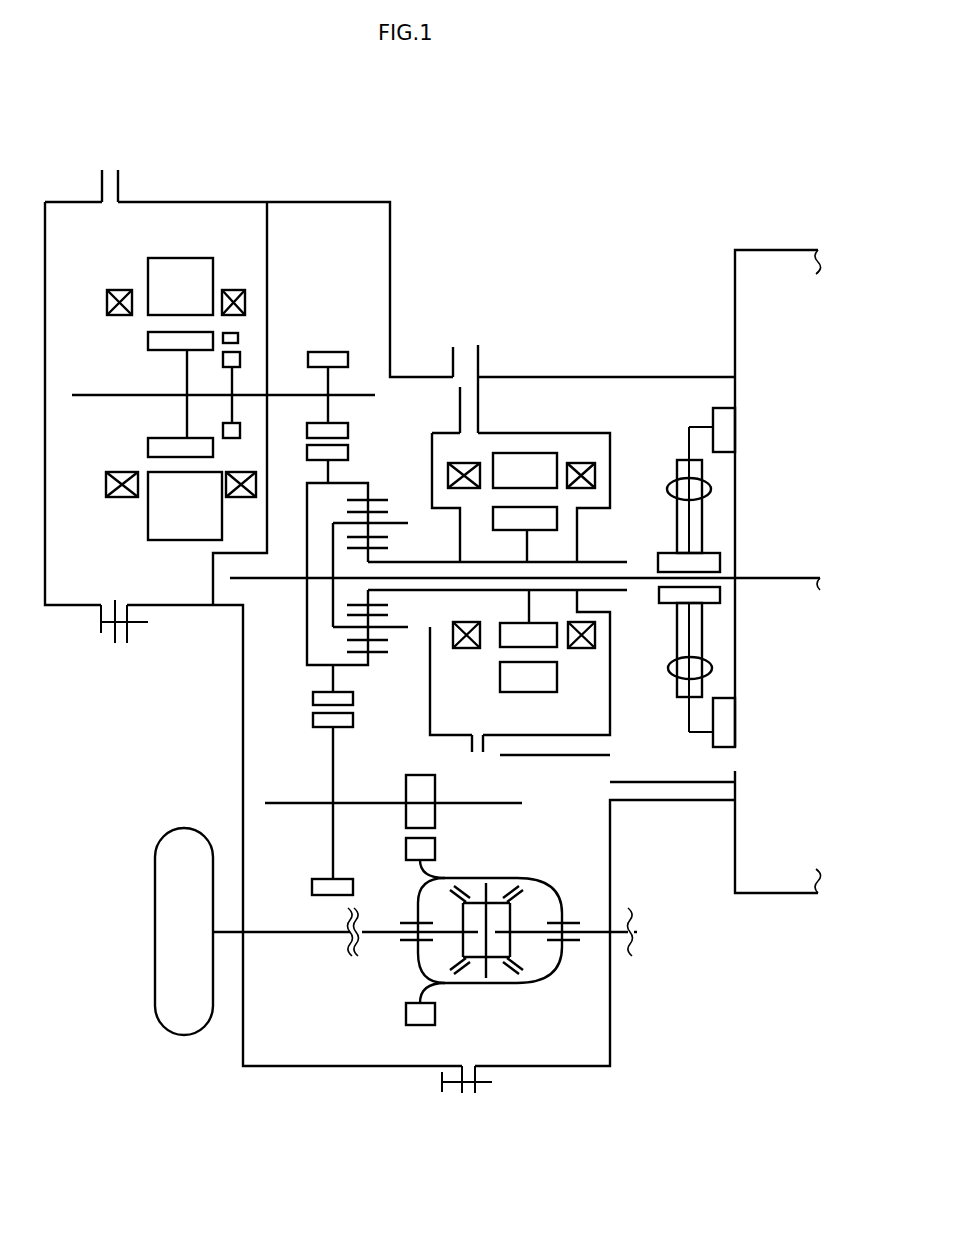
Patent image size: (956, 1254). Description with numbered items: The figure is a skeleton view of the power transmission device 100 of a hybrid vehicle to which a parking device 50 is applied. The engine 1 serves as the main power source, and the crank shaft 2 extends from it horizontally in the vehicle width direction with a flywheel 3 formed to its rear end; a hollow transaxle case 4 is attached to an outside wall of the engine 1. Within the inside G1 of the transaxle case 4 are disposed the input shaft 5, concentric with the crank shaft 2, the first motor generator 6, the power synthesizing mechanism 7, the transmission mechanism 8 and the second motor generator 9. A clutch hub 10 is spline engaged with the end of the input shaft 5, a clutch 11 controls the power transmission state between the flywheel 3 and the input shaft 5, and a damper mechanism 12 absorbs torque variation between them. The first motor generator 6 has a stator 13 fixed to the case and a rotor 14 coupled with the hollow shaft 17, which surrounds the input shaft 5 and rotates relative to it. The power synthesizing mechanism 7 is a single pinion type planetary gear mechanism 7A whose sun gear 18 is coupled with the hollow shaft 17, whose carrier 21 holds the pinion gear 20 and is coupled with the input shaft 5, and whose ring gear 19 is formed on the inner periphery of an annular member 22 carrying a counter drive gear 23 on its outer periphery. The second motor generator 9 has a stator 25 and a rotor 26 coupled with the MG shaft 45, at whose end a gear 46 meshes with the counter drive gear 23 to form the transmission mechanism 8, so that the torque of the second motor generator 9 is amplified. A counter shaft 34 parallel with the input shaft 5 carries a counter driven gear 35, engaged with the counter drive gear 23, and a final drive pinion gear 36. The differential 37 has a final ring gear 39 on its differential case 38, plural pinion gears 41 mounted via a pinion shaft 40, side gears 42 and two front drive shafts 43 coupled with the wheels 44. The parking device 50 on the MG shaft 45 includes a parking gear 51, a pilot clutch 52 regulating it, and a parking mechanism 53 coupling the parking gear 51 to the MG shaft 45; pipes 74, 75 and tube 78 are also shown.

The power transmission device 100 is at (490, 138).
The engine 1 is at (758, 245).
The crank shaft 2 is at (770, 576).
The flywheel 3 is at (736, 668).
The transaxle case 4 is at (525, 372).
The input shaft 5 is at (640, 577).
The first motor generator 6 is at (474, 457).
The power synthesizing mechanism 7 is at (352, 565).
The planetary gear mechanism 7A is at (381, 496).
The transmission mechanism 8 is at (294, 428).
The second motor generator 9 is at (126, 404).
The clutch hub 10 is at (662, 603).
The clutch 11 is at (710, 740).
The damper mechanism 12 is at (675, 682).
The stator 13 is at (543, 580).
The rotor 14 is at (491, 516).
The hollow shaft 17 is at (457, 595).
The sun gear 18 is at (383, 549).
The ring gear 19 is at (380, 654).
The pinion gear 20 is at (388, 636).
The carrier 21 is at (389, 623).
The annular member 22 is at (320, 668).
The counter drive gear 23 is at (312, 698).
The stator 25 is at (138, 546).
The rotor 26 is at (166, 351).
The counter shaft 34 is at (366, 806).
The counter driven gear 35 is at (316, 880).
The final drive pinion gear 36 is at (435, 782).
The differential 37 is at (472, 941).
The differential case 38 is at (505, 986).
The final ring gear 39 is at (435, 851).
The pinion shaft 40 is at (493, 892).
The pinion gears 41 is at (456, 892).
The side gears 42 is at (444, 904).
The front drive shafts 43 is at (295, 934).
The wheels 44 is at (192, 827).
The MG shaft 45 is at (287, 394).
The gear 46 is at (335, 353).
The parking device 50 is at (251, 348).
The parking gear 51 is at (224, 360).
The pilot clutch 52 is at (241, 337).
The parking mechanism 53 is at (226, 418).
The pipe 74 is at (478, 355).
The pipe 75 is at (454, 358).
The tube 78 is at (459, 397).
The inside G1 is at (690, 413).